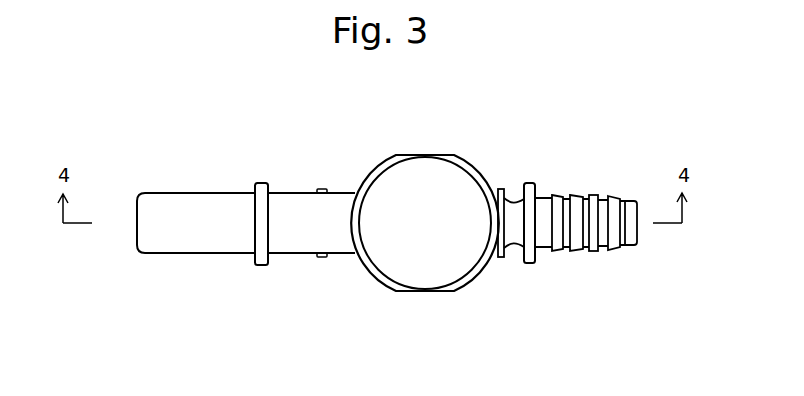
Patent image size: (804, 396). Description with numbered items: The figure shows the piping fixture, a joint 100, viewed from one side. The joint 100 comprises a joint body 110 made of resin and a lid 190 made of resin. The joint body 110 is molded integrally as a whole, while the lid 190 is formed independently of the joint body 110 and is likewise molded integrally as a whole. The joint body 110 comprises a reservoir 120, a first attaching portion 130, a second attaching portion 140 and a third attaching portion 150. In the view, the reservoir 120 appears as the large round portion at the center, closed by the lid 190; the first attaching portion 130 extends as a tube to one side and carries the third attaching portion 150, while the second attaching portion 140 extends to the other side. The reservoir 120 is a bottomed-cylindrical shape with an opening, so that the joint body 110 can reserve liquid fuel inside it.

The joint 100 is at (291, 158).
The joint body 110 is at (499, 189).
The reservoir 120 is at (375, 168).
The first attaching portion 130 is at (188, 193).
The second attaching portion 140 is at (595, 194).
The third attaching portion 150 is at (322, 258).
The lid 190 is at (433, 177).